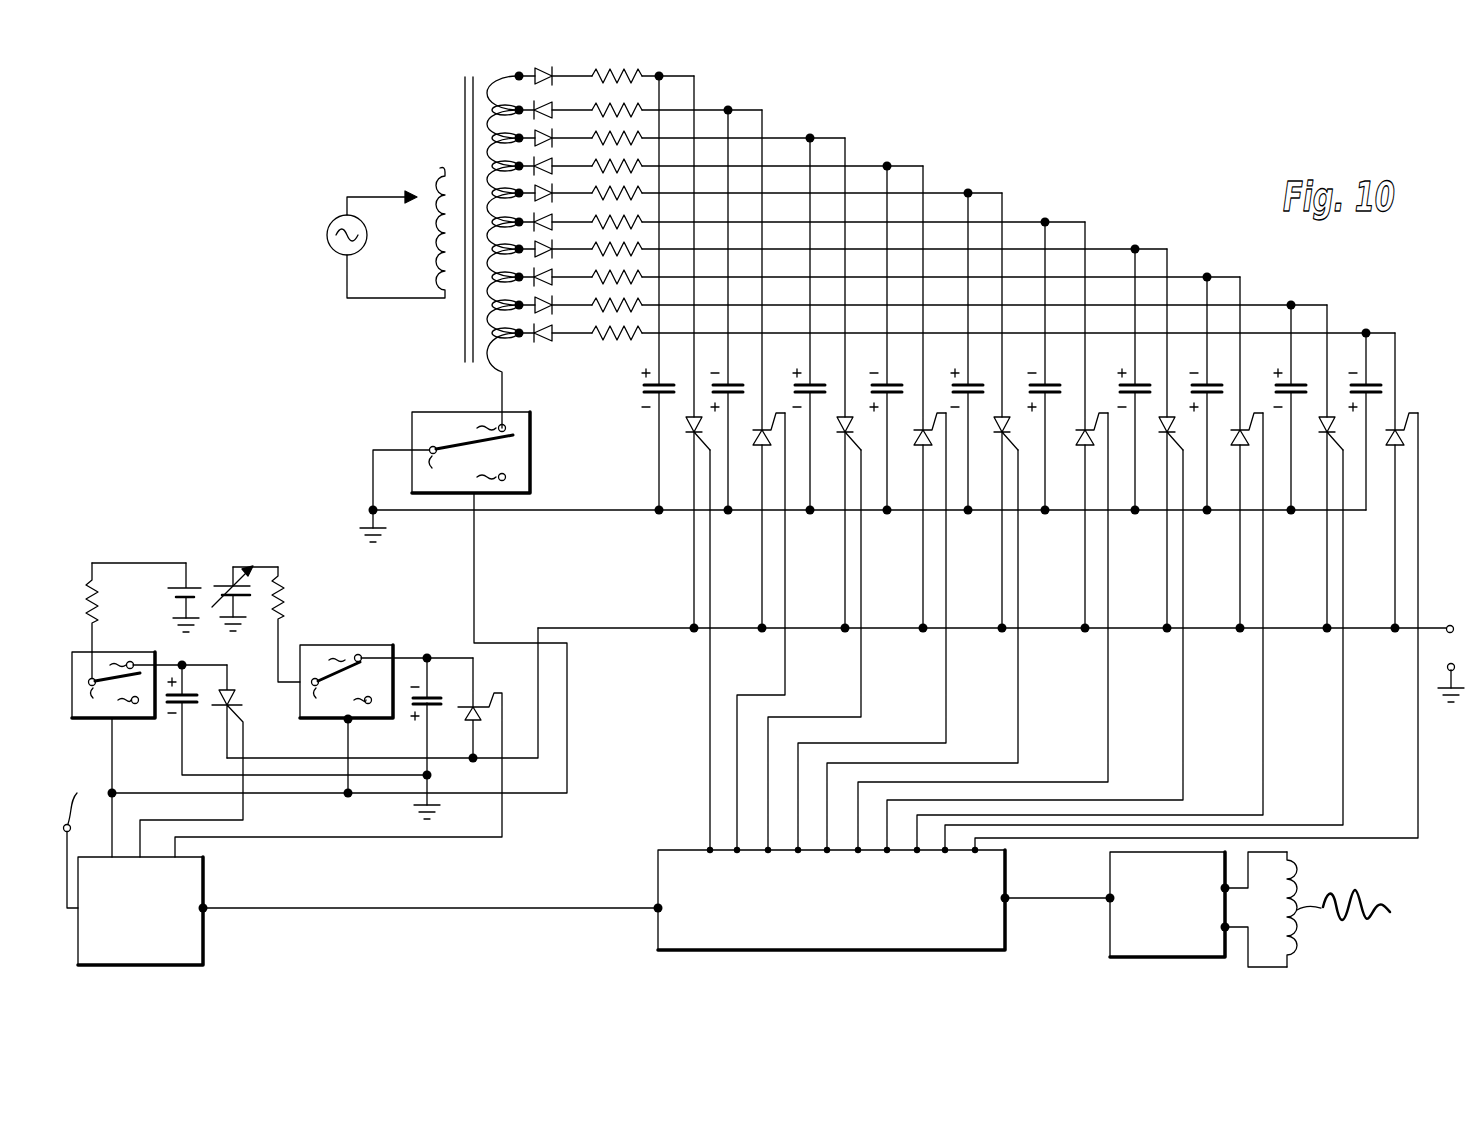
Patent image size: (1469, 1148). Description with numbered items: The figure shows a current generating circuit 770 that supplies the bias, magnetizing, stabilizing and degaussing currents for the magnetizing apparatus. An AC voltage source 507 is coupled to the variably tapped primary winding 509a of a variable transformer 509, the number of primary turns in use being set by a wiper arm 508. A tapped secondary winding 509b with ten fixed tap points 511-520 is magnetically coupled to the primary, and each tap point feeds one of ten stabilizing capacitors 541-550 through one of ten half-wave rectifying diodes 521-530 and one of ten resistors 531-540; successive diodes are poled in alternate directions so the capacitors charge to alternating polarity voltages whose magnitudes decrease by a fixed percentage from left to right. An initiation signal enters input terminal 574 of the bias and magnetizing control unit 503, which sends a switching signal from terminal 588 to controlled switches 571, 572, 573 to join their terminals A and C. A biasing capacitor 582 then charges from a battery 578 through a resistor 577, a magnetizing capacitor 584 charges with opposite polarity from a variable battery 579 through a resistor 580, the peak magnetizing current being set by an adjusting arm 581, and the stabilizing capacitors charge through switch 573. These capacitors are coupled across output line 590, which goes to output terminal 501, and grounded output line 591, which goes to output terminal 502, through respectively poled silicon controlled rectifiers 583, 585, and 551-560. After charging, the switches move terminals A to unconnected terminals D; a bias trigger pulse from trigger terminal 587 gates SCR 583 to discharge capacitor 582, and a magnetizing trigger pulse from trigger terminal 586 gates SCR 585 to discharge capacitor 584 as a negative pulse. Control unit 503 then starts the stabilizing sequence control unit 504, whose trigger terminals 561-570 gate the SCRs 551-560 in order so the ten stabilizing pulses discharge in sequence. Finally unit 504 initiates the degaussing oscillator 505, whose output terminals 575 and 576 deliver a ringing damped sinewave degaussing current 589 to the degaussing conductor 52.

The degaussing conductor 52 is at (1293, 940).
The output terminal 501 is at (1450, 624).
The output terminal 502 is at (1453, 652).
The bias and magnetizing control unit 503 is at (207, 937).
The stabilizing sequence control unit 504 is at (658, 870).
The degaussing oscillator 505 is at (1103, 937).
The AC voltage source 507 is at (327, 236).
The wiper arm 508 is at (382, 190).
The variable transformer 509 is at (445, 117).
The primary winding 509a is at (397, 221).
The secondary winding 509b is at (530, 252).
The fixed tap points 511-520 is at (486, 340).
The half-wave rectifying diodes 521-530 is at (548, 342).
The resistors 531-540 is at (607, 220).
The stabilizing capacitors 541-550 is at (642, 398).
The silicon controlled rectifiers 551-560 is at (686, 432).
The trigger terminals 561-570 is at (707, 847).
The controlled switch 571 is at (100, 720).
The controlled switch 572 is at (318, 720).
The controlled switch 573 is at (411, 430).
The input terminal 574 is at (83, 793).
The output terminal 575 is at (1229, 885).
The output terminal 576 is at (1228, 931).
The resistor 577 is at (104, 598).
The battery 578 is at (197, 583).
The variable battery 579 is at (250, 598).
The resistor 580 is at (290, 590).
The adjusting arm 581 is at (247, 566).
The biasing capacitor 582 is at (193, 708).
The silicon controlled rectifier 583 is at (231, 690).
The magnetizing capacitor 584 is at (438, 692).
The silicon controlled rectifier 585 is at (478, 700).
The trigger terminal 586 is at (178, 851).
The trigger terminal 587 is at (130, 832).
The terminal 588 is at (88, 863).
The degaussing current 589 is at (1354, 893).
The output line 590 is at (1425, 626).
The output line 591 is at (567, 511).
The current generating circuit 770 is at (1093, 191).